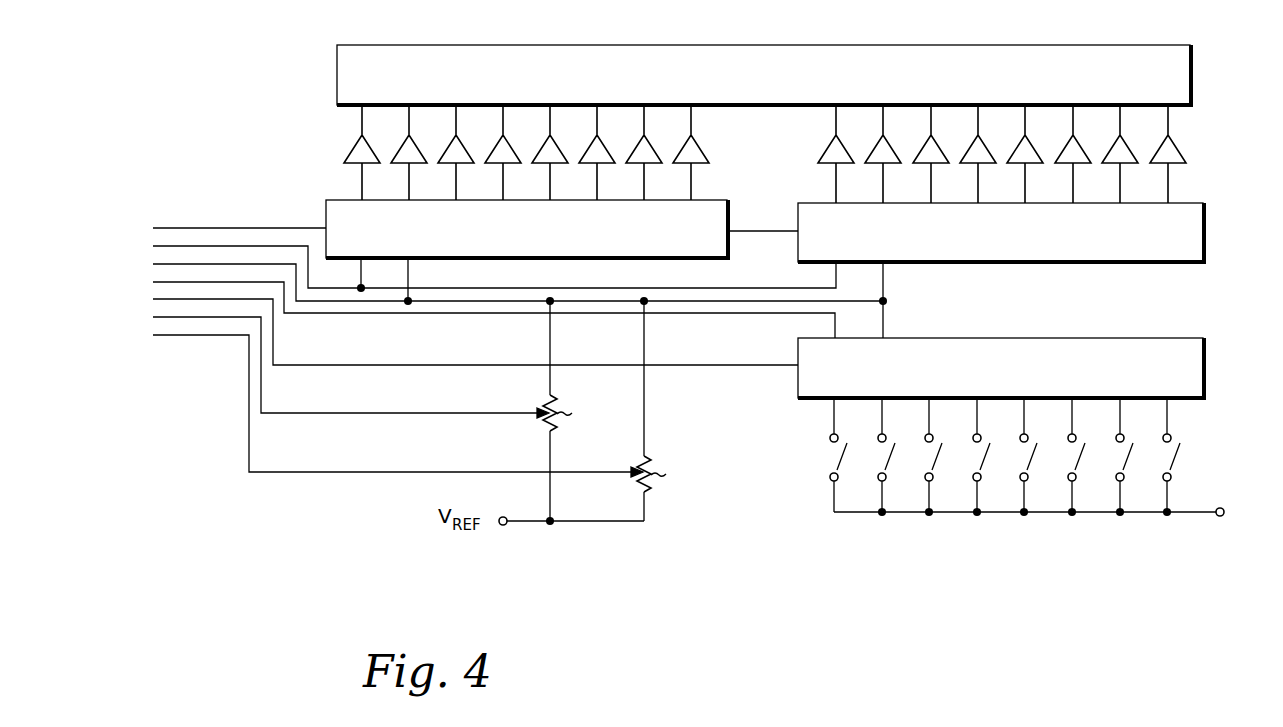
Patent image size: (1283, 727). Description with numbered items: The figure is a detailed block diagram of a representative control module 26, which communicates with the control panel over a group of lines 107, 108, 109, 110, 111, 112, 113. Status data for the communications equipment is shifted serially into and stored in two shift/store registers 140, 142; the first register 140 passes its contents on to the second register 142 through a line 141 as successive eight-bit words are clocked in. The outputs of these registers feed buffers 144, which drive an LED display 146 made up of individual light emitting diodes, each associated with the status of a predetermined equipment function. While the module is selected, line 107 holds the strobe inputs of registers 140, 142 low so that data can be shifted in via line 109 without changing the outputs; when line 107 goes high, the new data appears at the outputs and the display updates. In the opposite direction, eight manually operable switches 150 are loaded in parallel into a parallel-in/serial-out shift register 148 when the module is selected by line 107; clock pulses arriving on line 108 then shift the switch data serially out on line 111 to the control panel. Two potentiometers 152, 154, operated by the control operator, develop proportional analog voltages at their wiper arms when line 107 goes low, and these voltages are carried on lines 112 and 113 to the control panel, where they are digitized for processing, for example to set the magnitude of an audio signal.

The control module 26 is at (752, 530).
The line 107 is at (238, 264).
The line 108 is at (256, 282).
The line 109 is at (171, 228).
The line 110 is at (220, 246).
The line 111 is at (307, 364).
The line 112 is at (307, 412).
The line 113 is at (290, 470).
The register 140 is at (712, 200).
The line 141 is at (762, 232).
The register 142 is at (1206, 218).
The buffers 144 is at (1184, 160).
The display 146 is at (1175, 47).
The parallel-in/serial-out shift register 148 is at (1188, 338).
The manually operable switches 150 is at (1172, 472).
The potentiometer 152 is at (575, 413).
The potentiometer 154 is at (669, 474).